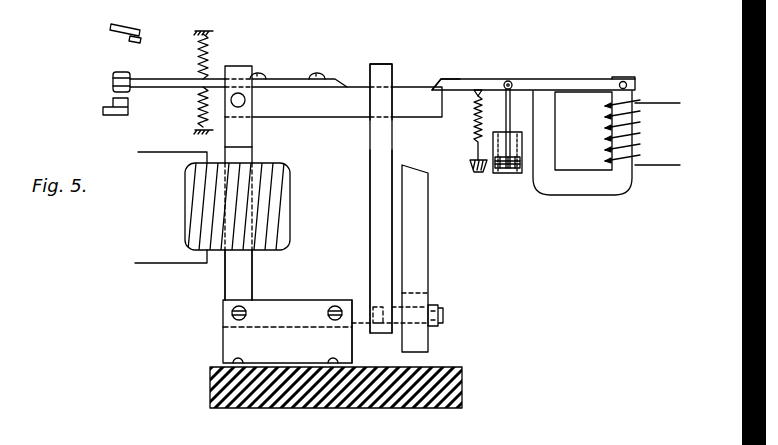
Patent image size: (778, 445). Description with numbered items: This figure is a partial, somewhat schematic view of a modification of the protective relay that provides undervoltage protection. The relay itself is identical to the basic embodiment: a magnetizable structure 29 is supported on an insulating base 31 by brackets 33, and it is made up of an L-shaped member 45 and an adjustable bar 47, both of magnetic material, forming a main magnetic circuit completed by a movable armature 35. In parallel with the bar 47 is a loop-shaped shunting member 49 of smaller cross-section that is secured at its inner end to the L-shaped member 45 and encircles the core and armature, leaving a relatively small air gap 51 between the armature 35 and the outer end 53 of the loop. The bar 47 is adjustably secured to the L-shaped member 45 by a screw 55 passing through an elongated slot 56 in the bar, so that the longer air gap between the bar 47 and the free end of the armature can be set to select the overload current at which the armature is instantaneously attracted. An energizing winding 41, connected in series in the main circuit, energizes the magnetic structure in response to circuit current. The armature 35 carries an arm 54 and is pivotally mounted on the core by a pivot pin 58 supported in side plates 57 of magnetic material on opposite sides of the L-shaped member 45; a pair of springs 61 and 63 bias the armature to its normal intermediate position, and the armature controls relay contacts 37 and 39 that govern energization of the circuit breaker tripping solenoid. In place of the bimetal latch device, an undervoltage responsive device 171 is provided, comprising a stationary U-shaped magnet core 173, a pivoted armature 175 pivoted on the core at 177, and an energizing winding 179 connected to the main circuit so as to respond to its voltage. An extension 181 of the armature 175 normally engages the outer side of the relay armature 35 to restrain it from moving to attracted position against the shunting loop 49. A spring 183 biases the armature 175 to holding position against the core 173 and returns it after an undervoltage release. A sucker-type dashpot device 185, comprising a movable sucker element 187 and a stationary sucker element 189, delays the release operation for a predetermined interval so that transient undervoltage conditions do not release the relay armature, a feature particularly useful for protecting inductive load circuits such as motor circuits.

The magnetizable structure 29 is at (350, 328).
The insulating base 31 is at (211, 381).
The brackets 33 is at (227, 342).
The movable armature 35 is at (331, 117).
The relay contact 37 is at (132, 40).
The relay contact 39 is at (117, 70).
The energizing winding 41 is at (286, 238).
The L-shaped member 45 is at (227, 276).
The adjustable bar 47 is at (418, 270).
The shunting member 49 is at (373, 183).
The air gap 51 is at (370, 75).
The outer end of the loop 53 is at (383, 64).
The arm 54 is at (308, 74).
The screw 55 is at (441, 316).
The elongated slot 56 is at (412, 341).
The side plates 57 is at (244, 142).
The pivot pin 58 is at (244, 100).
The spring 61 is at (200, 58).
The spring 63 is at (202, 104).
The undervoltage responsive device 171 is at (598, 137).
The U-shaped magnet core 173 is at (566, 197).
The pivoted armature 175 is at (565, 84).
The pivot 177 is at (626, 82).
The energizing winding 179 is at (634, 126).
The extension 181 is at (448, 85).
The spring 183 is at (473, 120).
The dashpot device 185 is at (522, 160).
The movable sucker element 187 is at (497, 168).
The stationary sucker element 189 is at (506, 173).